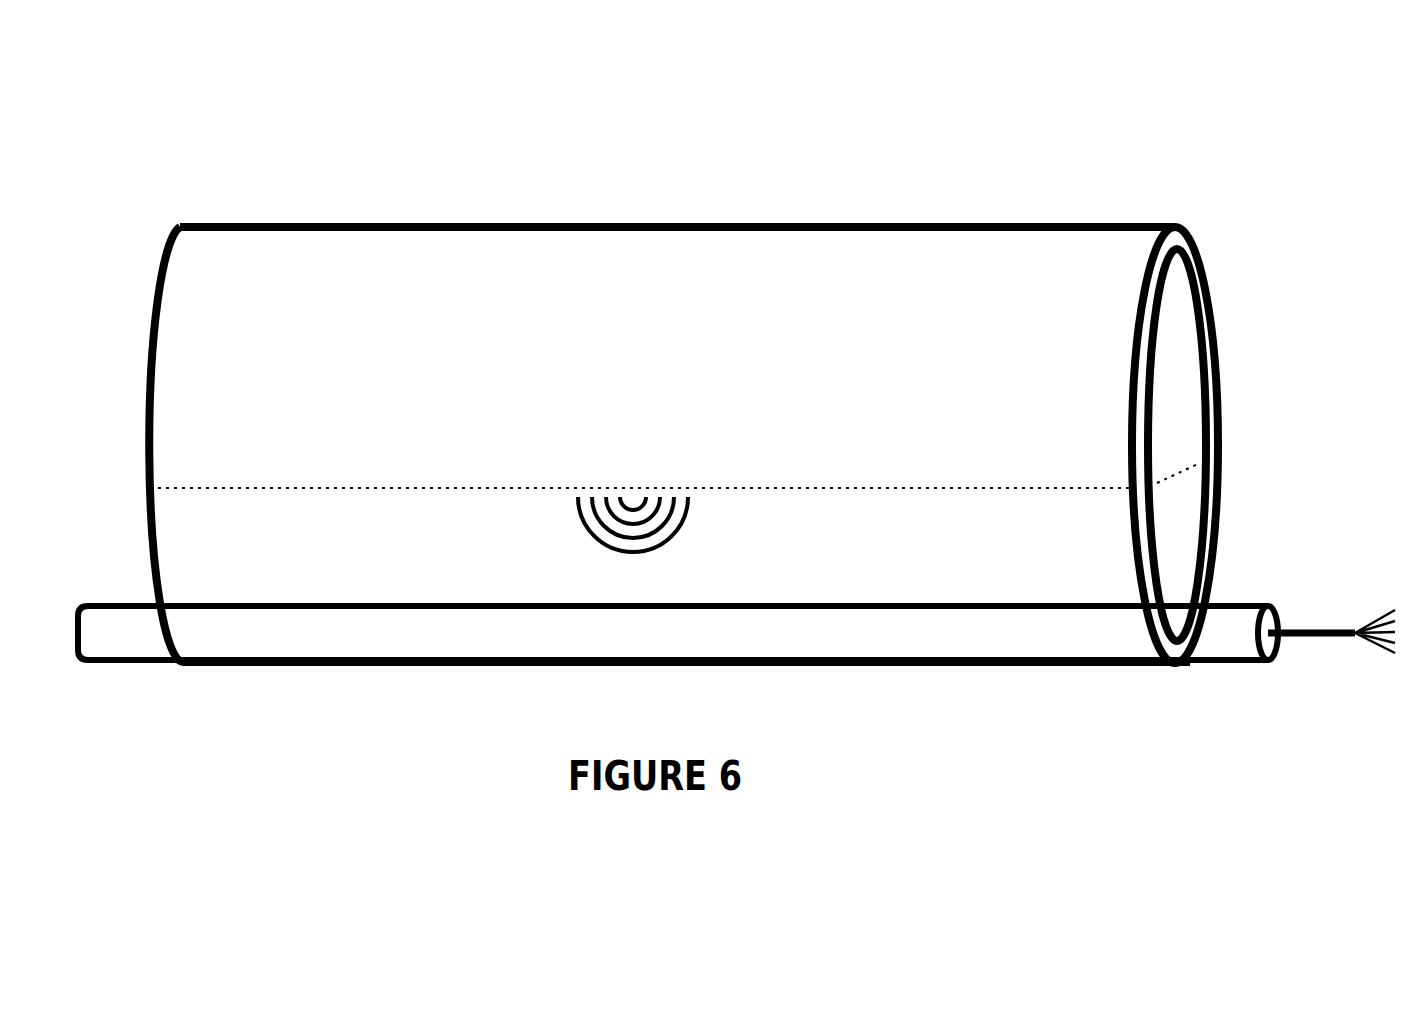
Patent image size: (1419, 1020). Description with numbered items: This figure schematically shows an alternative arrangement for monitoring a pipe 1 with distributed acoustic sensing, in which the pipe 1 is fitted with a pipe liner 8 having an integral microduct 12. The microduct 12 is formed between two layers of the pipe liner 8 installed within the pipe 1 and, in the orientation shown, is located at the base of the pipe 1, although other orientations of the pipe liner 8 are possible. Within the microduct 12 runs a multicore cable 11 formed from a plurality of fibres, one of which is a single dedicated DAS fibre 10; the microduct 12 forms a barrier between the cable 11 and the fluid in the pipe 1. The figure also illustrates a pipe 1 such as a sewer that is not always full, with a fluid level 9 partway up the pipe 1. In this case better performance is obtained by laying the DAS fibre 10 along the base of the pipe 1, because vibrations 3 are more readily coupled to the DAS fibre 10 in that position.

The pipe 1 is at (212, 222).
The vibrations 3 is at (733, 523).
The pipe liner 8 is at (1190, 587).
The fluid level 9 is at (820, 482).
The DAS fibre 10 is at (462, 600).
The multicore cable 11 is at (1308, 623).
The microduct 12 is at (1392, 603).